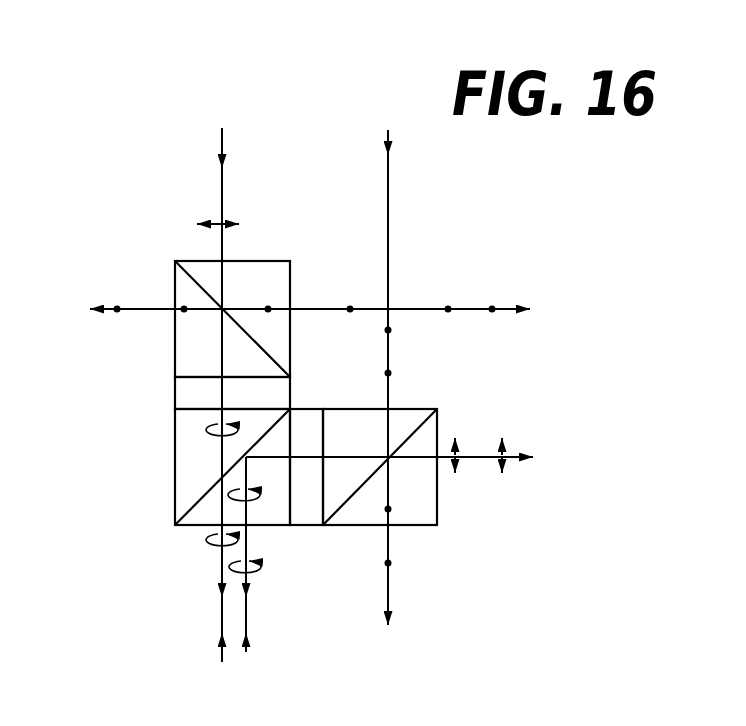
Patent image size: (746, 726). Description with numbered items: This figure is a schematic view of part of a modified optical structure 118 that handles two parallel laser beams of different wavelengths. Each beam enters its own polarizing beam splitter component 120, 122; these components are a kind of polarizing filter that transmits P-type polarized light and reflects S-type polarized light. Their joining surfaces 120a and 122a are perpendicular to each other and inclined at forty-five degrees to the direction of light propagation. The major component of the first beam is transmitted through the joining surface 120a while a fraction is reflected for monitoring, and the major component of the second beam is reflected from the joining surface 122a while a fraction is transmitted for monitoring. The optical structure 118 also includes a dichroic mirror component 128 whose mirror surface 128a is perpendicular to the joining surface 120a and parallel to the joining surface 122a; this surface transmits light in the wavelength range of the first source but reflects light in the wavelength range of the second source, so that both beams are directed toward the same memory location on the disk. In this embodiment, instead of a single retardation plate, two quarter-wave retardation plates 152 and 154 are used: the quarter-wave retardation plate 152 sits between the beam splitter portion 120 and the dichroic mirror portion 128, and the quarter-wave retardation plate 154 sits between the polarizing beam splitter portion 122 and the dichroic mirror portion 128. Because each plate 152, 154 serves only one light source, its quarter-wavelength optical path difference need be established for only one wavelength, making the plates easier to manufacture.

The optical structure 118 is at (455, 277).
The polarizing beam splitter component 120 is at (167, 283).
The joining surface 120a is at (195, 277).
The quarter-wave retardation plate 152 is at (177, 393).
The dichroic mirror component 128 is at (165, 478).
The mirror surface 128a is at (200, 500).
The quarter-wave retardation plate 154 is at (307, 525).
The polarizing beam splitter component 122 is at (442, 485).
The joining surface 122a is at (417, 423).